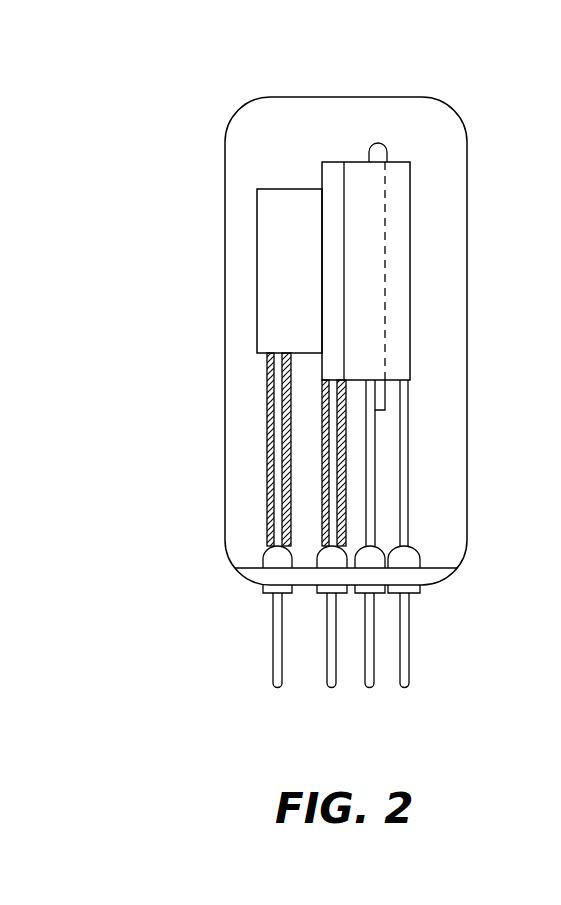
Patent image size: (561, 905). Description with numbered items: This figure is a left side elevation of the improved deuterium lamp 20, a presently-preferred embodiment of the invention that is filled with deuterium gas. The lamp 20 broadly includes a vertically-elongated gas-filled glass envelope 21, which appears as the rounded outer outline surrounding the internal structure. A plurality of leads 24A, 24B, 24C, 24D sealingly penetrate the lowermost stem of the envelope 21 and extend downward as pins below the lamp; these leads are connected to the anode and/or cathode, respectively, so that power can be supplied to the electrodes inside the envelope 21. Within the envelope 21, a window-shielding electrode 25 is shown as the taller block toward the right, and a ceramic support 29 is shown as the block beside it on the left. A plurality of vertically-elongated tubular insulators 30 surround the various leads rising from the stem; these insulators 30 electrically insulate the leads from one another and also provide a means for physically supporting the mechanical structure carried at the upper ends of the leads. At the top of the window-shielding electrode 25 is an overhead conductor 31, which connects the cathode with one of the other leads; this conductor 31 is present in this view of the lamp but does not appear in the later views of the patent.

The deuterium lamp 20 is at (180, 100).
The glass envelope 21 is at (233, 403).
The lead 24A is at (277, 688).
The lead 24B is at (332, 688).
The lead 24C is at (369, 688).
The lead 24D is at (404, 688).
The window-shielding electrode 25 is at (403, 345).
The ceramic support 29 is at (262, 272).
The tubular insulator 30 is at (268, 465).
The overhead conductor 31 is at (377, 144).